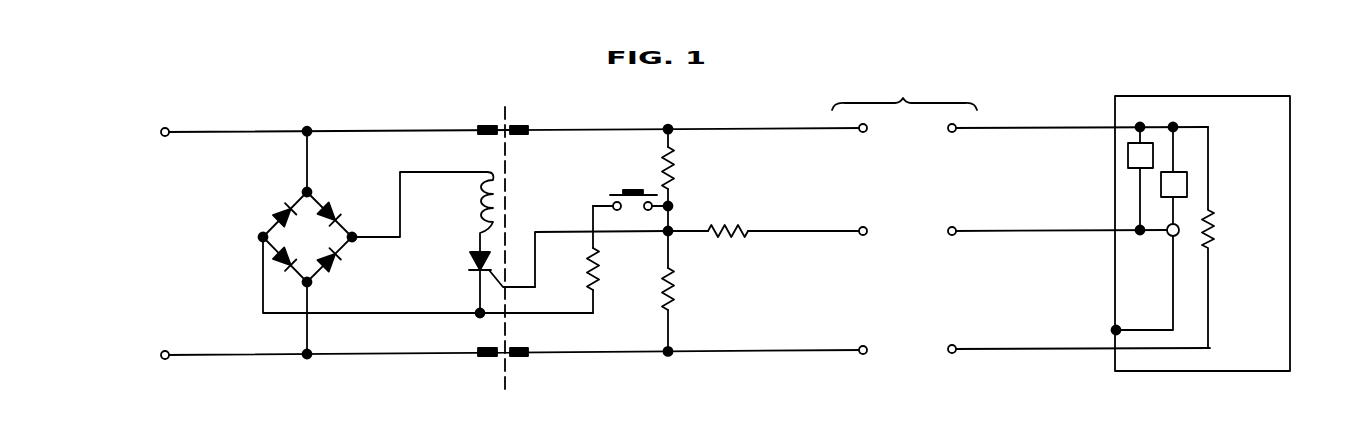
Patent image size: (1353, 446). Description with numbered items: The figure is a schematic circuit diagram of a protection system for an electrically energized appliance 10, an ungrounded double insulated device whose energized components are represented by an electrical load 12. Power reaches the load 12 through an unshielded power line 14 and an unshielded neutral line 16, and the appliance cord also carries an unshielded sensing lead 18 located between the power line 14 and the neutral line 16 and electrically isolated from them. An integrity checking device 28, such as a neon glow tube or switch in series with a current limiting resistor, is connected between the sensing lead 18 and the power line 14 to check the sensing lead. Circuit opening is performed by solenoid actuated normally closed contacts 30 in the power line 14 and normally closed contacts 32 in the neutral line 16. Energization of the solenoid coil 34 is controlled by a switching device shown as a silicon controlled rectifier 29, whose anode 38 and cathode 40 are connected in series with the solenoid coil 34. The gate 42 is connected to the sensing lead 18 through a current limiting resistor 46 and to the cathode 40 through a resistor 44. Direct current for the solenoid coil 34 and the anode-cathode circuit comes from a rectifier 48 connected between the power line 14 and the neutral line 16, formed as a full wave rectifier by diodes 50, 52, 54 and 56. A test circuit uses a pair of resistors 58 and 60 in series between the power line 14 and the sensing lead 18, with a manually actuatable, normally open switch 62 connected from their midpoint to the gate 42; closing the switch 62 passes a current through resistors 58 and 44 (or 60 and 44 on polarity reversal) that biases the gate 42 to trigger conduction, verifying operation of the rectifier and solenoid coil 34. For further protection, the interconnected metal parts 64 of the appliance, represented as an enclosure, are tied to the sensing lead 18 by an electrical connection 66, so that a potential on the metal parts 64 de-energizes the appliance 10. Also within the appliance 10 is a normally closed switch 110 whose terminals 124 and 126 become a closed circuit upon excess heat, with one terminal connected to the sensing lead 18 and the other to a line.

The appliance 10 is at (1196, 241).
The electrical load 12 is at (1215, 228).
The power line 14 is at (243, 131).
The neutral line 16 is at (239, 354).
The sensing lead 18 is at (826, 231).
The integrity checking device 28 is at (1187, 178).
The silicon controlled rectifier 29 is at (469, 284).
The normally closed contacts 30 is at (513, 104).
The normally closed contacts 32 is at (513, 368).
The solenoid coil 34 is at (472, 217).
The anode 38 is at (470, 262).
The cathode 40 is at (476, 280).
The gate 42 is at (506, 300).
The resistor 44 is at (600, 273).
The current limiting resistor 46 is at (731, 240).
The rectifier 48 is at (392, 242).
The diode 50 is at (344, 206).
The diode 52 is at (283, 204).
The diode 54 is at (280, 268).
The diode 56 is at (339, 268).
The resistor 58 is at (678, 177).
The resistor 60 is at (676, 291).
The manually actuatable switch 62 is at (627, 191).
The metal parts 64 is at (1200, 371).
The electrical connection 66 is at (1173, 272).
The normally closed switch 110 is at (1128, 155).
The terminal 124 is at (1140, 127).
The terminal 126 is at (1130, 240).